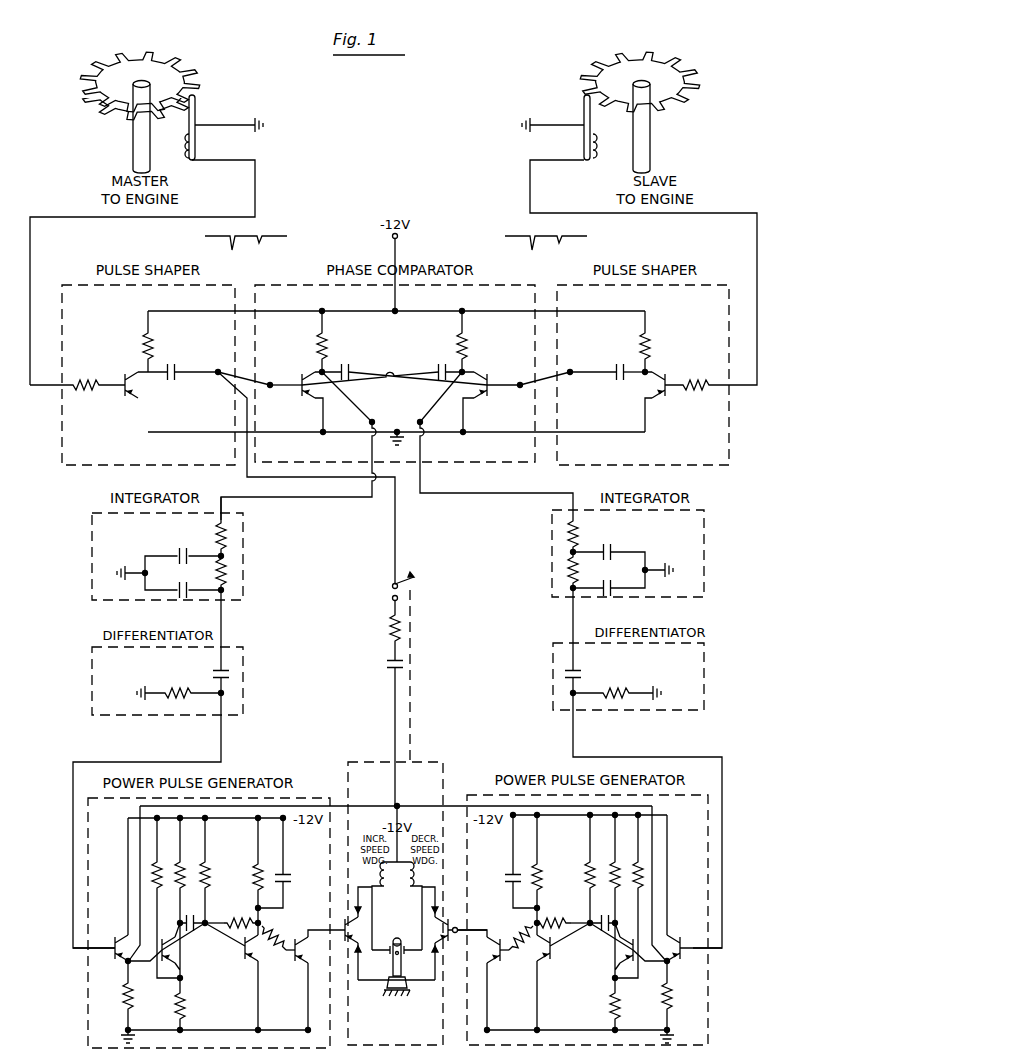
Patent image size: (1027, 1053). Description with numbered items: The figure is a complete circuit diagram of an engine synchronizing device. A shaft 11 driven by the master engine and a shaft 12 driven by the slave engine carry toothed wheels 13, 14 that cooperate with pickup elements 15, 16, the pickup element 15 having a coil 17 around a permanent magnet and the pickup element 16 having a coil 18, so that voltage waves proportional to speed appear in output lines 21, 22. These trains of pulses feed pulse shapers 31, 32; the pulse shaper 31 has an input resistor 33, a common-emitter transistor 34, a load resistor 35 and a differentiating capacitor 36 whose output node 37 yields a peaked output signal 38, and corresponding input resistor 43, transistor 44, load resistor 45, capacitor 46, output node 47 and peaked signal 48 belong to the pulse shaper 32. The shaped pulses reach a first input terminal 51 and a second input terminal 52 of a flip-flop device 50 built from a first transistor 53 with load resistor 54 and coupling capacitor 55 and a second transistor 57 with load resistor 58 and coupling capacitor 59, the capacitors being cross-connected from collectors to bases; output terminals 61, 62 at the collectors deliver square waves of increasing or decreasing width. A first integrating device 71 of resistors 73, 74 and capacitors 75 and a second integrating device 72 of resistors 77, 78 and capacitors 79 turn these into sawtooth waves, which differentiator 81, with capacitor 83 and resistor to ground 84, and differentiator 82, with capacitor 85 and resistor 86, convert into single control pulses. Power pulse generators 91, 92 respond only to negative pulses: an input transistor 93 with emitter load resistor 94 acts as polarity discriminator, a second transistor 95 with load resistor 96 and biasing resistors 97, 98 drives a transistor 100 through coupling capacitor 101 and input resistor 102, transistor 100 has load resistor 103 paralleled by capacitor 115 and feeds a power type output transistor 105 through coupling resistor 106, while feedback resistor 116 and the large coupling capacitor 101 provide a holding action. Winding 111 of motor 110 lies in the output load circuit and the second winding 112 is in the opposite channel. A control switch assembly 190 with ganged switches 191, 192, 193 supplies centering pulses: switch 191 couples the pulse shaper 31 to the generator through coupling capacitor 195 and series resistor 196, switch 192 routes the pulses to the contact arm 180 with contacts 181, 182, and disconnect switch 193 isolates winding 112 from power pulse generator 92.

The shaft 11 is at (133, 146).
The shaft 12 is at (654, 146).
The toothed wheel 13 is at (195, 62).
The toothed wheel 14 is at (685, 56).
The pickup element 15 is at (203, 113).
The pickup element 16 is at (583, 113).
The coil 17 is at (200, 143).
The coil 18 is at (583, 143).
The output line 21 is at (258, 187).
The output line 22 is at (530, 190).
The pulse shaper 31 is at (62, 444).
The pulse shaper 32 is at (729, 418).
The input resistor 33 is at (87, 382).
The transistor 34 is at (130, 378).
The load resistor 35 is at (150, 344).
The capacitor 36 is at (175, 364).
The output node 37 is at (218, 370).
The peaked output signal 38 is at (285, 244).
The input resistor 43 is at (686, 382).
The transistor 44 is at (668, 376).
The load resistor 45 is at (654, 331).
The capacitor 46 is at (619, 360).
The node 47 is at (571, 376).
The peaked output signal 48 is at (589, 241).
The flip-flop device 50 is at (480, 307).
The first input terminal 51 is at (271, 387).
The second input terminal 52 is at (520, 387).
The first transistor 53 is at (300, 372).
The load resistor 54 is at (334, 334).
The coupling capacitor 55 is at (354, 383).
The second transistor 57 is at (489, 375).
The load resistor 58 is at (460, 343).
The coupling capacitor 59 is at (438, 364).
The output terminal 61 is at (311, 446).
The output terminal 62 is at (496, 445).
The first integrating device 71 is at (92, 564).
The second integrating device 72 is at (556, 569).
The resistor 73 is at (242, 531).
The resistor 74 is at (242, 575).
The capacitors 75 is at (182, 585).
The resistor 77 is at (587, 531).
The resistor 78 is at (578, 580).
The capacitors 79 is at (617, 582).
The differentiator 81 is at (92, 686).
The differentiator 82 is at (556, 684).
The capacitor 83 is at (213, 670).
The resistor to ground 84 is at (172, 692).
The capacitor 85 is at (580, 676).
The resistor 86 is at (620, 693).
The power pulse generator 91 is at (87, 1012).
The power pulse generator 92 is at (468, 1002).
The transistor 93 is at (116, 934).
The load resistor 94 is at (122, 1002).
The second transistor 95 is at (164, 936).
The load resistor 96 is at (182, 870).
The resistor 97 is at (187, 1006).
The resistor 98 is at (157, 870).
The transistor 100 is at (246, 968).
The coupling capacitor 101 is at (194, 940).
The input resistor 102 is at (208, 870).
The load resistor 103 is at (257, 882).
The power type output transistor 105 is at (301, 936).
The coupling resistor 106 is at (275, 954).
The motor 110 is at (396, 893).
The winding 111 is at (386, 906).
The second winding 112 is at (414, 906).
The capacitor 115 is at (285, 876).
The resistor 116 is at (242, 914).
The contact arm 180 is at (402, 942).
The contact 181 is at (380, 955).
The contact 182 is at (416, 955).
The control switch assembly 190 is at (418, 750).
The switch 191 is at (424, 584).
The single-pole double-throw switch 192 is at (349, 933).
The disconnect switch 193 is at (454, 933).
The coupling capacitor 195 is at (388, 663).
The series resistor 196 is at (390, 629).